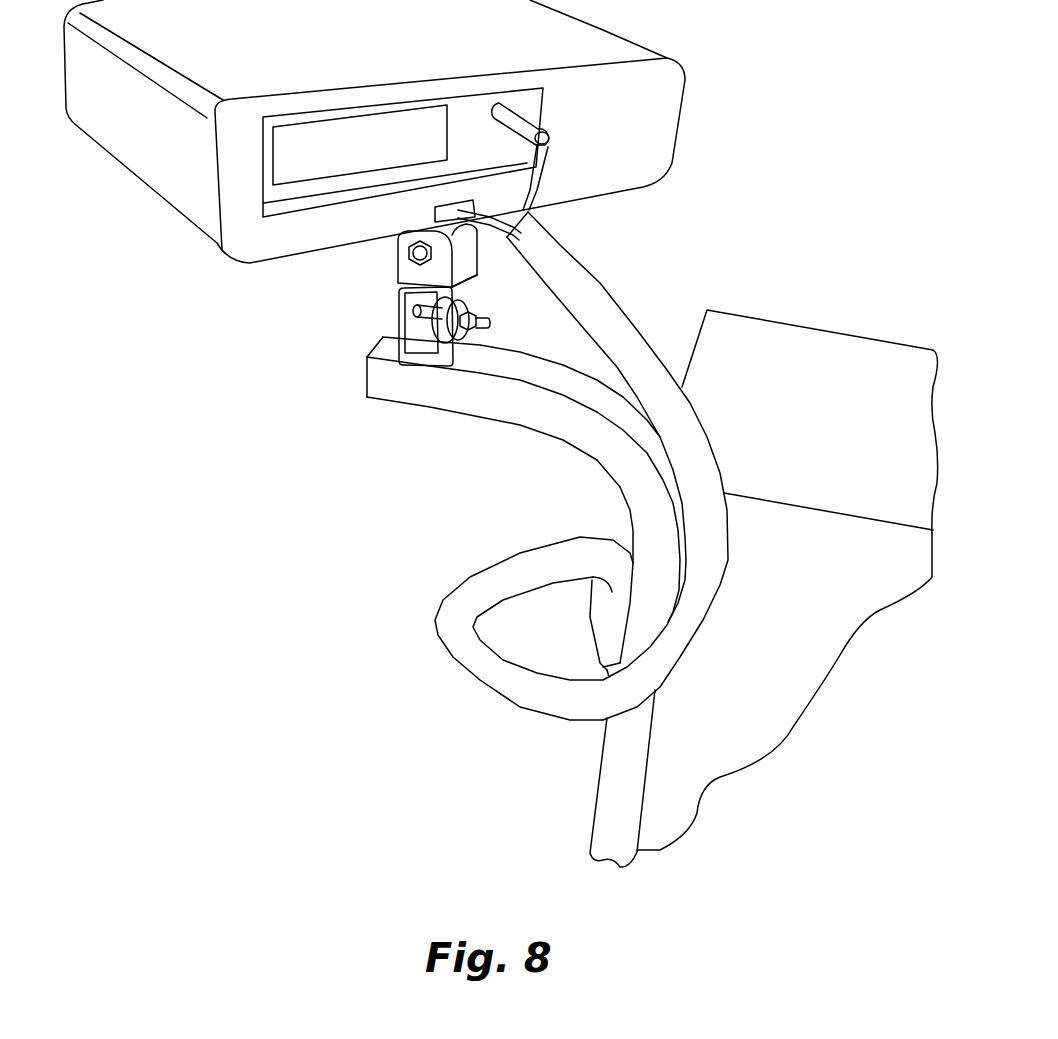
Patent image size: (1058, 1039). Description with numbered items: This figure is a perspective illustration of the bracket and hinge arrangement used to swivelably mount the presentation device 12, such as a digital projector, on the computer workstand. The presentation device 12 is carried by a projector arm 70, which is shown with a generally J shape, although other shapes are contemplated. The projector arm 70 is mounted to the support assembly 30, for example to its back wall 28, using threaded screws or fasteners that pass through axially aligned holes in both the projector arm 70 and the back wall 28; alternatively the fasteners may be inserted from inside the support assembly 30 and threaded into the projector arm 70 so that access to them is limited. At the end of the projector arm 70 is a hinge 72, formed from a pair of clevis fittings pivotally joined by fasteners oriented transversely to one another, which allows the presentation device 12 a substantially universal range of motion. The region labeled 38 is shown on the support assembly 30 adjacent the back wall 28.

The presentation device 12 is at (379, 45).
The hinge 72 is at (398, 258).
The projector arm 70 is at (482, 407).
The support assembly 30 is at (787, 534).
The upper panel section 38 is at (812, 411).
The back wall 28 is at (747, 709).